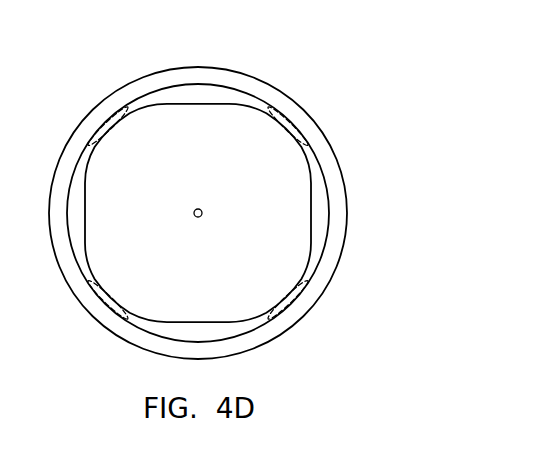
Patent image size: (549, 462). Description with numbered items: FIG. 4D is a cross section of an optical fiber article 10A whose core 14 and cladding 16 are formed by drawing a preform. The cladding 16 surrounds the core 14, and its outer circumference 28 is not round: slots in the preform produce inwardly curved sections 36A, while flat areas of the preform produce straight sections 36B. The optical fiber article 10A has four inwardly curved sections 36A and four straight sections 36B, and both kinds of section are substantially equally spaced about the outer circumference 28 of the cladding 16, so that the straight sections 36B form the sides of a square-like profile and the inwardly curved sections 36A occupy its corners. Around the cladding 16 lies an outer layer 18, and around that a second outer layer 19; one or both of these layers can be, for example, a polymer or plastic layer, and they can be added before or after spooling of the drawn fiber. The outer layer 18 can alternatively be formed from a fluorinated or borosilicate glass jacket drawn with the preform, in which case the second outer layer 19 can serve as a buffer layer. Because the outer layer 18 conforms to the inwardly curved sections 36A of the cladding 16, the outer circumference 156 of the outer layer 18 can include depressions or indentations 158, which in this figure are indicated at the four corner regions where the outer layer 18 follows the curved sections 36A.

The optical fiber article 10A is at (100, 68).
The core 14 is at (202, 210).
The cladding 16 is at (162, 118).
The outer layer 18 is at (210, 93).
The second outer layer 19 is at (340, 235).
The outer circumference of the cladding 28 is at (312, 186).
The inwardly curved section 36A is at (113, 143).
The straight section 36B is at (195, 105).
The outer circumference of the outer layer 156 is at (170, 336).
The depression or indentation 158 is at (85, 122).